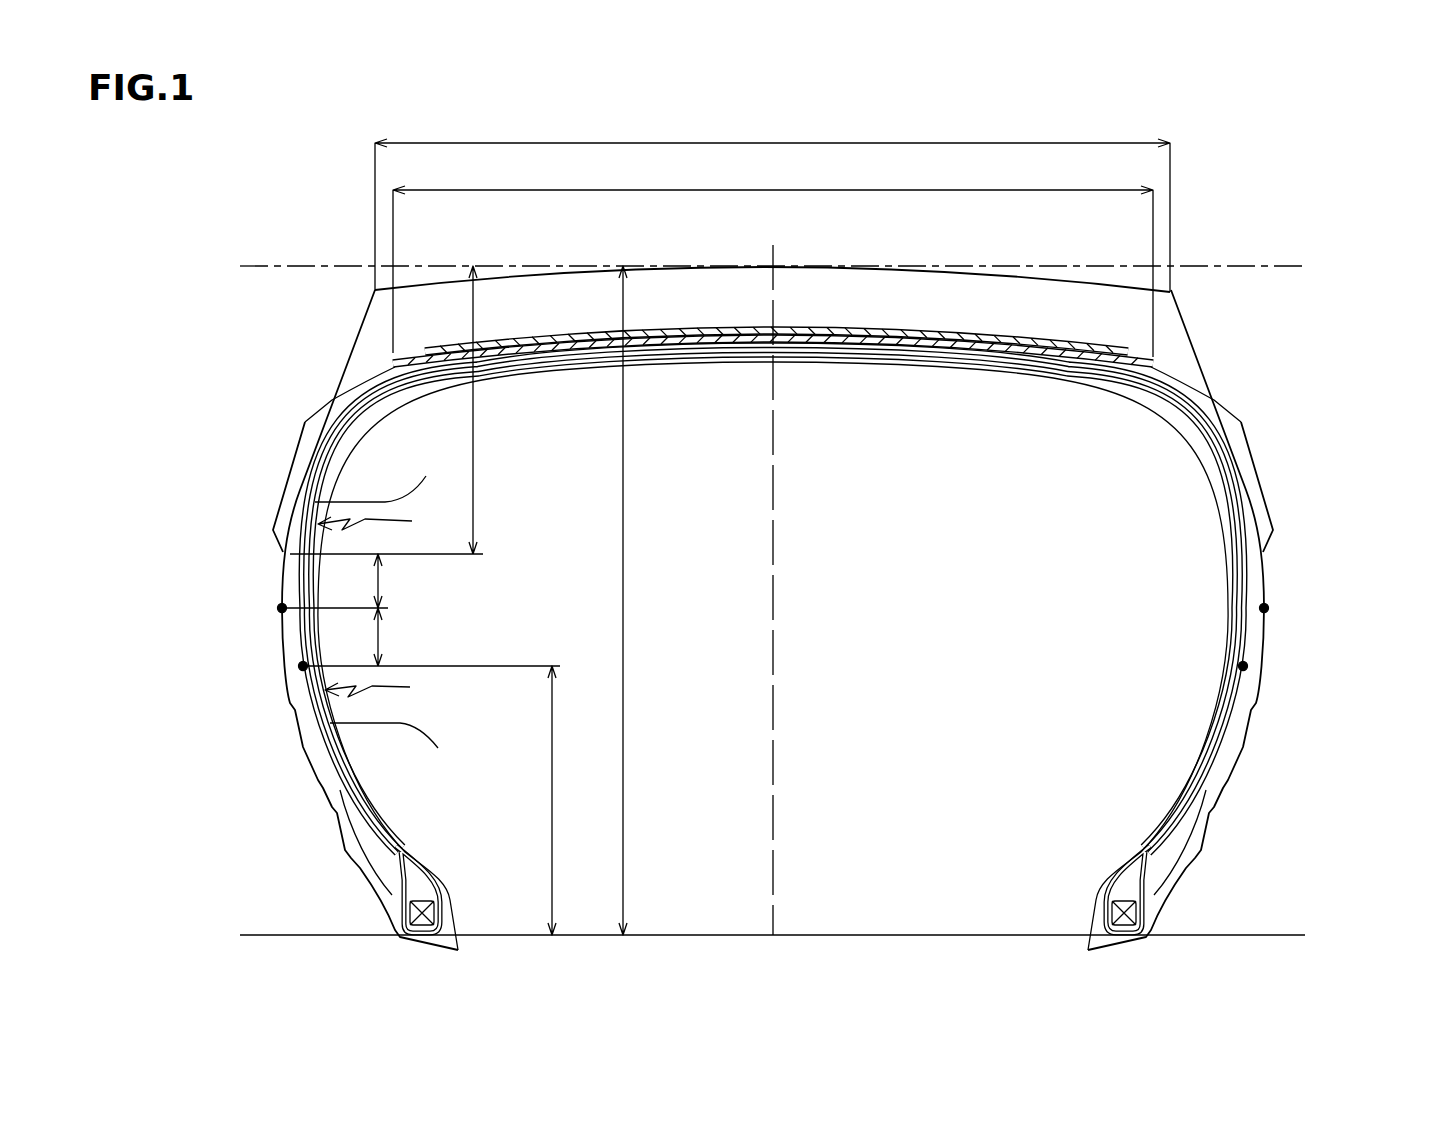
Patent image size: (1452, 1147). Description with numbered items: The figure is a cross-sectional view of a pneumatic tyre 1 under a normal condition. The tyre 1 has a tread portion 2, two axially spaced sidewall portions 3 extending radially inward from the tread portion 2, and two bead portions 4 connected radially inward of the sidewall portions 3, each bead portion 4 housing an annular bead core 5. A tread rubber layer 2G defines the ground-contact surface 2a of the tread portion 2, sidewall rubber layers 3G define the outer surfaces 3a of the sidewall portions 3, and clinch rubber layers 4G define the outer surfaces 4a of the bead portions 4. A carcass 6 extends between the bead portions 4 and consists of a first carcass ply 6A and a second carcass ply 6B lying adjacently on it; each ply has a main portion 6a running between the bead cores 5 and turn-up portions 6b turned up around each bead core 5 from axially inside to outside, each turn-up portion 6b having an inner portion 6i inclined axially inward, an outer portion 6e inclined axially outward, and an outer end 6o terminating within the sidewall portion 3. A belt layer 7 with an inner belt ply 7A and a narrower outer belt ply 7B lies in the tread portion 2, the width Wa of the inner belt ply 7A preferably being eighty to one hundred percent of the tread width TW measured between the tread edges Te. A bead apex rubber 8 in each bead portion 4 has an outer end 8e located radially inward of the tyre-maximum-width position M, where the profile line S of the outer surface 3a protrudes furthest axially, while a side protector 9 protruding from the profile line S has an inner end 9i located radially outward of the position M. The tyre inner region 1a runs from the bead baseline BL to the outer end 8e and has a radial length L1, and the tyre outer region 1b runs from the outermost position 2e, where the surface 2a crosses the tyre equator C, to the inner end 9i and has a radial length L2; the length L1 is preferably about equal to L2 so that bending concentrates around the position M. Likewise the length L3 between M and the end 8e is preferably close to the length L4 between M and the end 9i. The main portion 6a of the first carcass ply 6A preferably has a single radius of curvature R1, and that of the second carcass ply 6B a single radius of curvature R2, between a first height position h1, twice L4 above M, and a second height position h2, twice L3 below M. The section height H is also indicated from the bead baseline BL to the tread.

The pneumatic tyre 1 is at (1292, 193).
The tyre inner region 1a is at (287, 795).
The tyre outer region 1b is at (305, 372).
The tread portion 2 is at (1072, 250).
The ground-contact surface 2a is at (572, 272).
The outermost position 2e is at (803, 266).
The tread rubber layer 2G is at (918, 298).
The sidewall portion 3 is at (219, 594).
The outer surface of sidewall portion 3a is at (1248, 738).
The sidewall rubber layer 3G is at (1205, 410).
The bead portion 4 is at (321, 863).
The outer surface of bead portion 4a is at (1187, 862).
The clinch rubber layer 4G is at (1195, 828).
The bead core 5 is at (432, 905).
The carcass 6 is at (797, 436).
The first carcass ply 6A is at (1063, 352).
The second carcass ply 6B is at (988, 347).
The main portion 6a is at (1235, 660).
The turn-up portion 6b is at (290, 866).
The outer portion of turn-up portion 6e is at (397, 843).
The inner portion of turn-up portion 6i is at (403, 897).
The outer end of turn-up portion 6o is at (1237, 570).
The belt layer 7 is at (930, 436).
The inner belt ply 7A is at (820, 338).
The outer belt ply 7B is at (893, 333).
The bead apex rubber 8 is at (455, 855).
The outer end of bead apex rubber 8e is at (303, 666).
The side protector 9 is at (303, 468).
The inner end of side protector 9i is at (279, 556).
The profile line S is at (282, 575).
The tyre-maximum-width position M is at (282, 608).
The tread edge Te is at (373, 289).
The tread width TW is at (772, 200).
The width of inner belt ply Wa is at (773, 257).
The tyre equator C is at (772, 570).
The tire section height H is at (610, 600).
The length of tyre inner region L1 is at (570, 800).
The length of tyre outer region L2 is at (402, 410).
The length between M and 8e L3 is at (431, 637).
The length between M and 9i L4 is at (348, 581).
The radius of curvature of first carcass ply main portion R1 is at (386, 688).
The radius of curvature of second carcass ply main portion R2 is at (383, 522).
The first height position h1 is at (385, 477).
The second height position h2 is at (405, 746).
The bead baseline BL is at (888, 936).